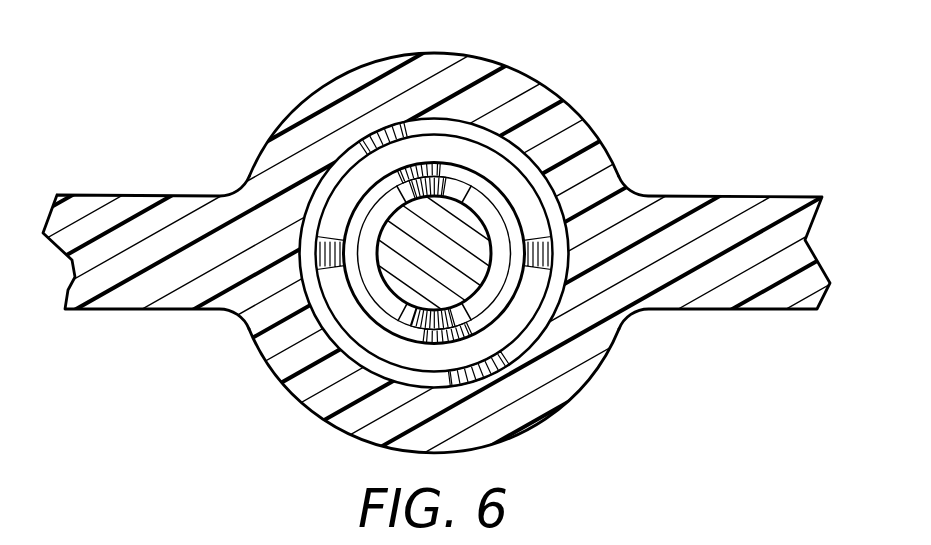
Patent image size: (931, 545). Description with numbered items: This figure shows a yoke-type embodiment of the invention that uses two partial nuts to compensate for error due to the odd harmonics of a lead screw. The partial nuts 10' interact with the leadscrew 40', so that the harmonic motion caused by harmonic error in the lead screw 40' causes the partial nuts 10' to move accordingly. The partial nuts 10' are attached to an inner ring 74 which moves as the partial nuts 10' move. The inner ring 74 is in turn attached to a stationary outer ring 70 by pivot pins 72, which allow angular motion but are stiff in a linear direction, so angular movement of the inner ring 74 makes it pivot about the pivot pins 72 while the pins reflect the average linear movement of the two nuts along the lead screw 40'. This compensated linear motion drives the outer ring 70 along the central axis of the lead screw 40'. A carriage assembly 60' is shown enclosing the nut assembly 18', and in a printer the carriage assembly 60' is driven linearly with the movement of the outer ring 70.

The partial nuts 10' is at (477, 243).
The nut assembly 18' is at (445, 253).
The leadscrew 40' is at (375, 196).
The carriage assembly 60' is at (465, 250).
The outer ring 70 is at (541, 343).
The pivot pins 72 is at (313, 245).
The inner ring 74 is at (347, 218).